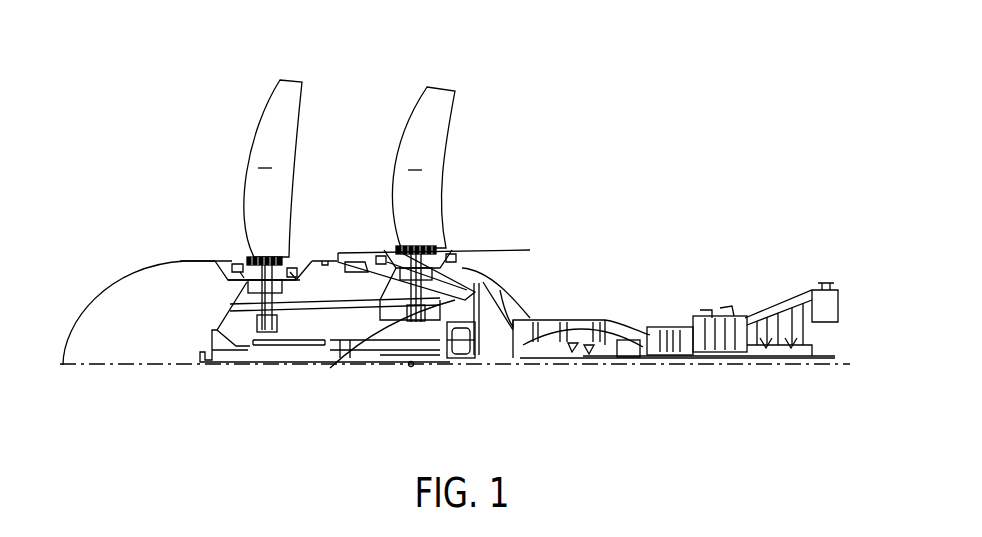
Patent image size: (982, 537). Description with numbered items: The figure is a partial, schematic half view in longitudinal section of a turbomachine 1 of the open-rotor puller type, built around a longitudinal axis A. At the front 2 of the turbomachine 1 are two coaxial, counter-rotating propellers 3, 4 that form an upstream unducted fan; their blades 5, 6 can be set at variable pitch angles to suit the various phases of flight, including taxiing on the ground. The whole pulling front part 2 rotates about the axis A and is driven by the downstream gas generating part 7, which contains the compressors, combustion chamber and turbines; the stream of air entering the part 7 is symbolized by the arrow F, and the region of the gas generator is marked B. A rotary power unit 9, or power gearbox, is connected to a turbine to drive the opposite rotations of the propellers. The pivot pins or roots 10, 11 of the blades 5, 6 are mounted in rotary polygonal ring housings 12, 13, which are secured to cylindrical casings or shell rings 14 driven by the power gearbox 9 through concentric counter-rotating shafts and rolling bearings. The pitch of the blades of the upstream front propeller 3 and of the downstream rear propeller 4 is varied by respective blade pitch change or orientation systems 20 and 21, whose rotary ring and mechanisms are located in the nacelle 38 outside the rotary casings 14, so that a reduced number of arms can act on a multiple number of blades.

The turbomachine 1 is at (693, 92).
The front 2 is at (138, 345).
The upstream front propeller 3 is at (251, 146).
The downstream rear propeller 4 is at (399, 144).
The blades of first propeller 5 is at (272, 88).
The blades of second propeller 6 is at (417, 92).
The gas generating part 7 is at (580, 365).
The rotary power unit 9 is at (464, 364).
The pivot pins of blades 5 10 is at (246, 256).
The pivot pins of blades 6 11 is at (404, 250).
The rotary polygonal ring housing 12 is at (220, 262).
The rotary polygonal ring housing 13 is at (447, 250).
The cylindrical casings 14 is at (395, 300).
The blade pitch change system 20 is at (234, 350).
The blade pitch change system 21 is at (368, 333).
The nacelle 38 is at (512, 258).
The arrow F is at (463, 295).
The gas generator region B is at (532, 285).
The longitudinal axis A is at (845, 358).